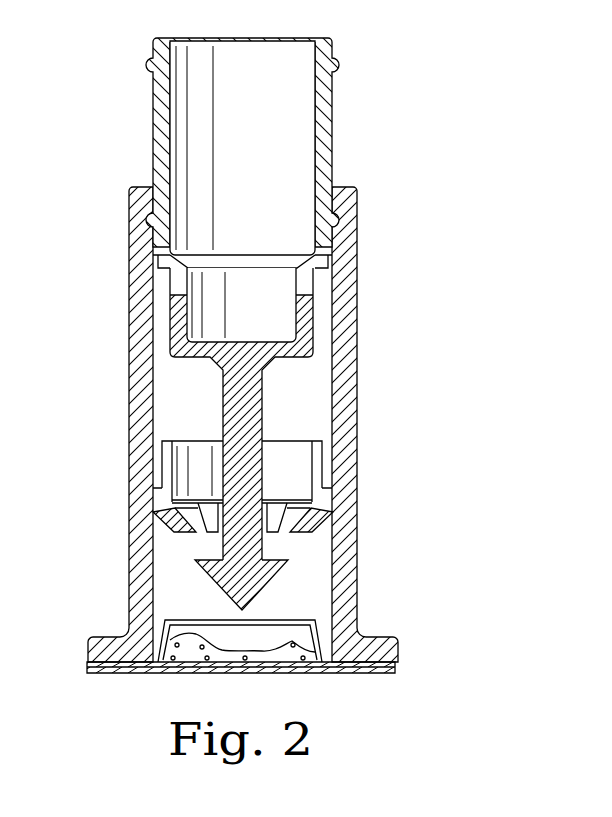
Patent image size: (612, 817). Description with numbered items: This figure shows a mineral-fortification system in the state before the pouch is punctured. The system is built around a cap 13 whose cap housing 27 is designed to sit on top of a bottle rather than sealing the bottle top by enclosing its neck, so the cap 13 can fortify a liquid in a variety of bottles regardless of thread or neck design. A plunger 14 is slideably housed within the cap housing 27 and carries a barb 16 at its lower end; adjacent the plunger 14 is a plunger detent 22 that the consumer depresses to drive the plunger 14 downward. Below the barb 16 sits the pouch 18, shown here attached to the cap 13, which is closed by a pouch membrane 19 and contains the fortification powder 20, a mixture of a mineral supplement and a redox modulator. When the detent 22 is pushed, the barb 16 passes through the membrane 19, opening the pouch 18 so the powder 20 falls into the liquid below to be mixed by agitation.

The cap 13 is at (378, 252).
The plunger 14 is at (263, 405).
The barb 16 is at (263, 585).
The pouch 18 is at (323, 635).
The pouch membrane 19 is at (193, 620).
The fortification powder 20 is at (167, 622).
The plunger detent 22 is at (333, 100).
The cap housing 27 is at (357, 466).